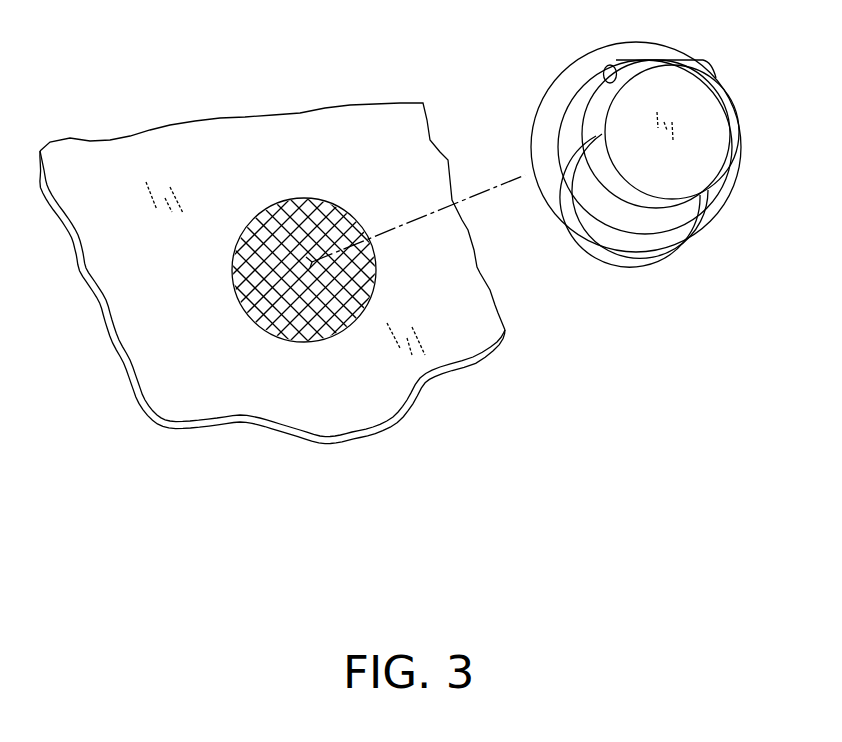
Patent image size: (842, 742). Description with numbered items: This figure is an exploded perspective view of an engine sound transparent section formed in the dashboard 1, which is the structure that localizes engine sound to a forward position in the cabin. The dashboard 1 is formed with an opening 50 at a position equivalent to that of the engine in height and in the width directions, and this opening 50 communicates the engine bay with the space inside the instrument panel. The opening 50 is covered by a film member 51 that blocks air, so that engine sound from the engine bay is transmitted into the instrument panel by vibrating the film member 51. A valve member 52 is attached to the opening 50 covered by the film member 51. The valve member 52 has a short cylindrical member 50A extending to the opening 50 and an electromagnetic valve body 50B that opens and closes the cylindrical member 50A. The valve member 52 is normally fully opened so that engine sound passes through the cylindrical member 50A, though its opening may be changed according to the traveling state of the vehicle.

The dashboard 1 is at (275, 135).
The opening 50 is at (265, 325).
The film member 51 is at (316, 325).
The valve member 52 is at (658, 258).
The cylindrical member 50A is at (603, 182).
The electromagnetic valve body 50B is at (702, 158).